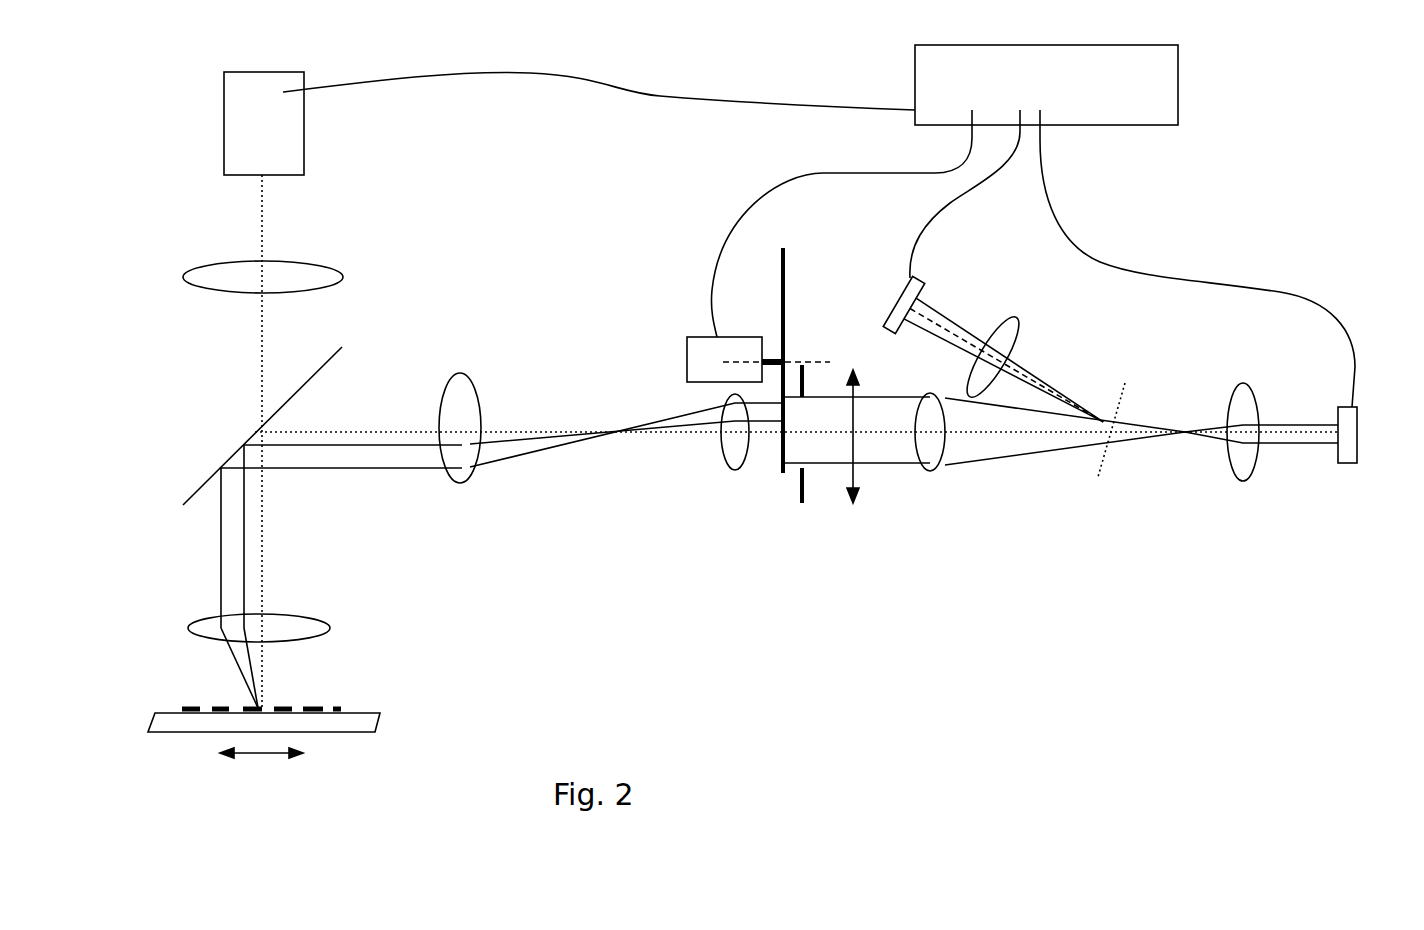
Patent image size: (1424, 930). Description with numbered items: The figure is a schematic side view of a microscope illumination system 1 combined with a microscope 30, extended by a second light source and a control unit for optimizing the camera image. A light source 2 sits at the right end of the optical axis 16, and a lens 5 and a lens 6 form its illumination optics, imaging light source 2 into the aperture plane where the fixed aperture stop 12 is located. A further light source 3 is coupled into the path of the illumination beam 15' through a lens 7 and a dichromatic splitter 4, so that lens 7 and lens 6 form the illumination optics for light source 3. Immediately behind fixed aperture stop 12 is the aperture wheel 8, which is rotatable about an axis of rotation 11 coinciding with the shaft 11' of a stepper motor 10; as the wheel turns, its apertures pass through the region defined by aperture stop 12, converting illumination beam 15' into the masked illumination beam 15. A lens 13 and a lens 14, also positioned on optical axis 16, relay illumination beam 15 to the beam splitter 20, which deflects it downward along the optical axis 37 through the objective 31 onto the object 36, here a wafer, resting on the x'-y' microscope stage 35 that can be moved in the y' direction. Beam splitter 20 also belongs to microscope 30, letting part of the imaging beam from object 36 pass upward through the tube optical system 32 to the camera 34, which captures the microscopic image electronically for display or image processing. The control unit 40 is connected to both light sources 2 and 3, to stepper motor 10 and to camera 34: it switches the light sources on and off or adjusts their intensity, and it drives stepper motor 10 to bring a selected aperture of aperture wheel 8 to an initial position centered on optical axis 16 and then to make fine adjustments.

The microscope illumination system 1 is at (1061, 605).
The light source 2 is at (1360, 425).
The light source 3 is at (990, 350).
The dichromatic splitter 4 is at (1125, 397).
The lens 5 is at (1243, 383).
The lens 6 is at (940, 457).
The lens 7 is at (1013, 327).
The aperture wheel 8 is at (864, 431).
The stepper motor 10 is at (700, 355).
The axis of rotation 11 is at (812, 360).
The shaft 11' is at (781, 321).
The fixed aperture stop 12 is at (805, 498).
The lens 13 is at (735, 470).
The lens 14 is at (467, 375).
The illumination beam 15 is at (467, 555).
The illumination beam 15' is at (1060, 458).
The optical axis 16 is at (360, 427).
The beam splitter 20 is at (198, 487).
The microscope 30 is at (163, 348).
The objective 31 is at (323, 623).
The tube optical system 32 is at (342, 273).
The camera 34 is at (290, 118).
The microscope stage 35 is at (368, 730).
The object 36 is at (328, 710).
The optical axis 37 is at (263, 212).
The control unit 40 is at (1160, 103).
The scanning direction y' is at (261, 780).